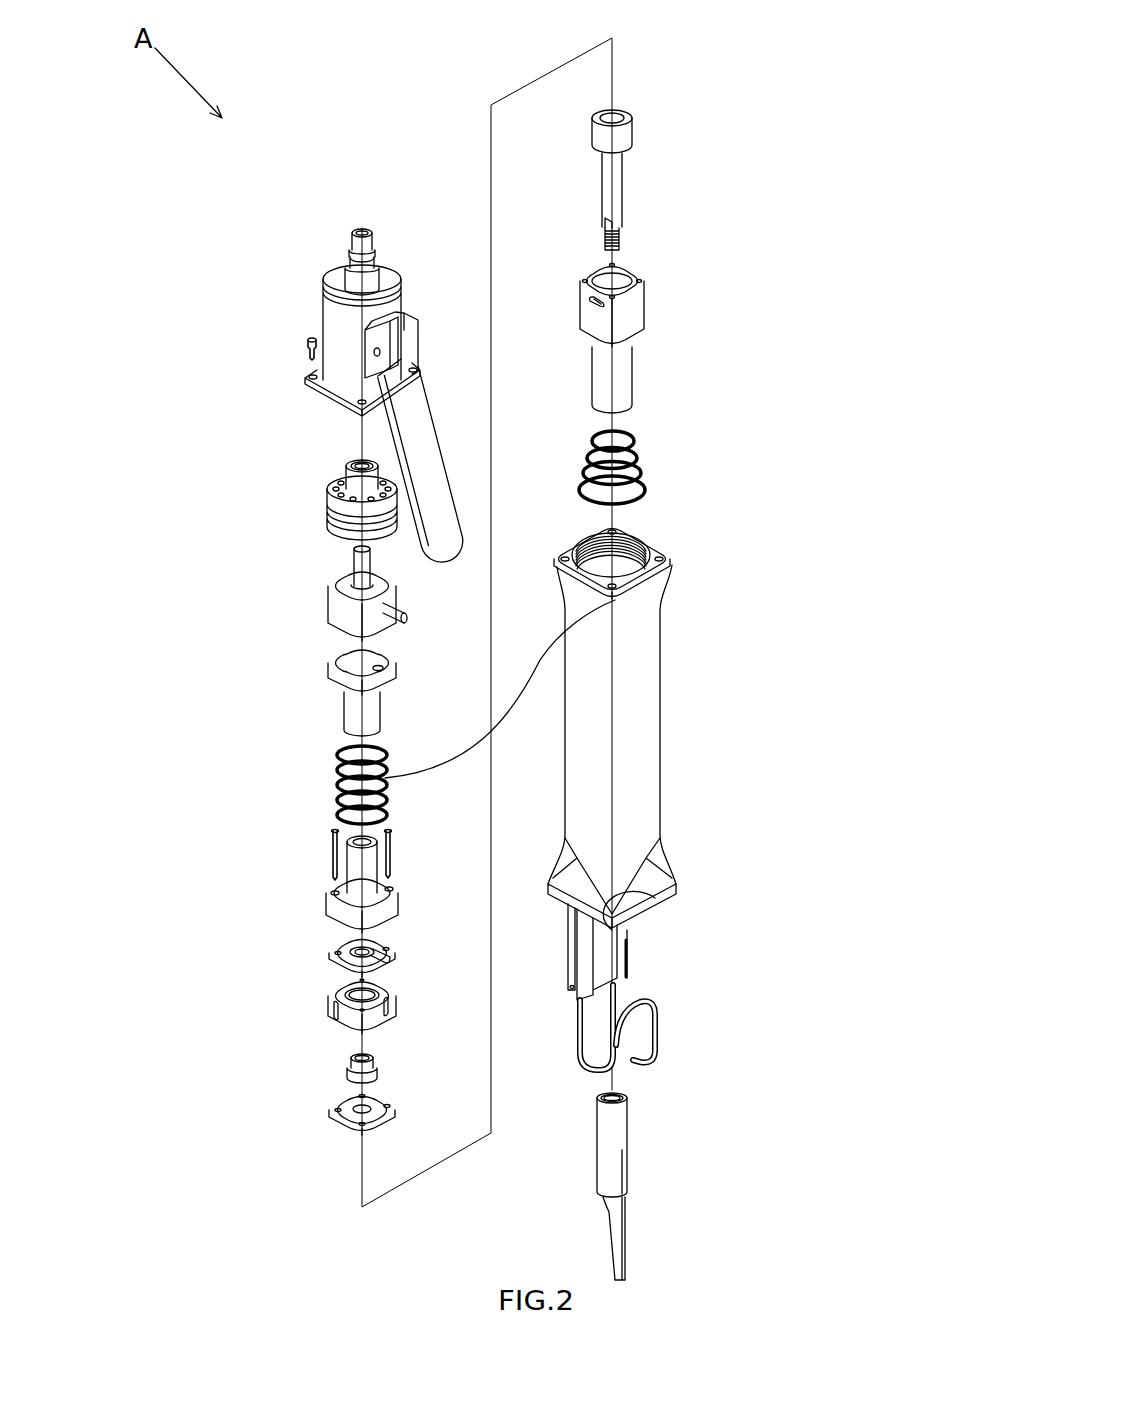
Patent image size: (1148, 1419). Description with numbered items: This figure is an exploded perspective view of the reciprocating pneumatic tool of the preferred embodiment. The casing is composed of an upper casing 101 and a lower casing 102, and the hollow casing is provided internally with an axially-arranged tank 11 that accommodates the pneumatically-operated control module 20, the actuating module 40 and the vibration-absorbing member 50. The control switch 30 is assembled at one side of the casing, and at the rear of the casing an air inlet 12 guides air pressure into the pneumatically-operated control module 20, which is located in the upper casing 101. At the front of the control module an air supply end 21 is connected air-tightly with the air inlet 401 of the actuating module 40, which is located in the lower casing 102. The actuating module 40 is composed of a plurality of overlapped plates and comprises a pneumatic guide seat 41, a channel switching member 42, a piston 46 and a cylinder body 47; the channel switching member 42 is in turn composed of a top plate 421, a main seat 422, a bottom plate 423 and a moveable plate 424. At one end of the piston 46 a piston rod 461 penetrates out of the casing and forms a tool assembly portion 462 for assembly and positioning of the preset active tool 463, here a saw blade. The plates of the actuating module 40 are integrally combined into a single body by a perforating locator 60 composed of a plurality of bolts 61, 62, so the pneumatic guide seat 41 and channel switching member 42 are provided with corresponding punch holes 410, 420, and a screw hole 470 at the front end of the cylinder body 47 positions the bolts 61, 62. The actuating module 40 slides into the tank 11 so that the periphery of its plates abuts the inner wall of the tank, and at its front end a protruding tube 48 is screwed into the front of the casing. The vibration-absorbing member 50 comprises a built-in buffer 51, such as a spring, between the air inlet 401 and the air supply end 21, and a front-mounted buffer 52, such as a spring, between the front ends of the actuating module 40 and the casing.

The tank 11 is at (600, 565).
The air inlet 12 is at (360, 232).
The pneumatically-operated control module 20 is at (315, 593).
The air supply end 21 is at (385, 714).
The control switch 30 is at (393, 440).
The actuating module 40 is at (249, 955).
The pneumatic guide seat 41 is at (400, 903).
The channel switching member 42 is at (336, 1038).
The piston 46 is at (592, 128).
The cylinder body 47 is at (648, 292).
The protruding tube 48 is at (633, 374).
The vibration-absorbing member 50 is at (675, 750).
The built-in buffer 51 is at (643, 555).
The front-mounted buffer 52 is at (645, 473).
The perforating locator 60 is at (294, 842).
The bolt 61 is at (333, 838).
The bolt 62 is at (386, 858).
The upper casing 101 is at (323, 318).
The lower casing 102 is at (660, 718).
The air inlet 401 is at (378, 843).
The punch hole 410 is at (407, 860).
The punch hole 420 is at (392, 953).
The top plate 421 is at (342, 965).
The main seat 422 is at (330, 1010).
The bottom plate 423 is at (340, 1105).
The moveable plate 424 is at (350, 1058).
The piston rod 461 is at (603, 186).
The tool assembly portion 462 is at (605, 238).
The active tool 463 is at (628, 1207).
The screw hole 470 is at (633, 277).